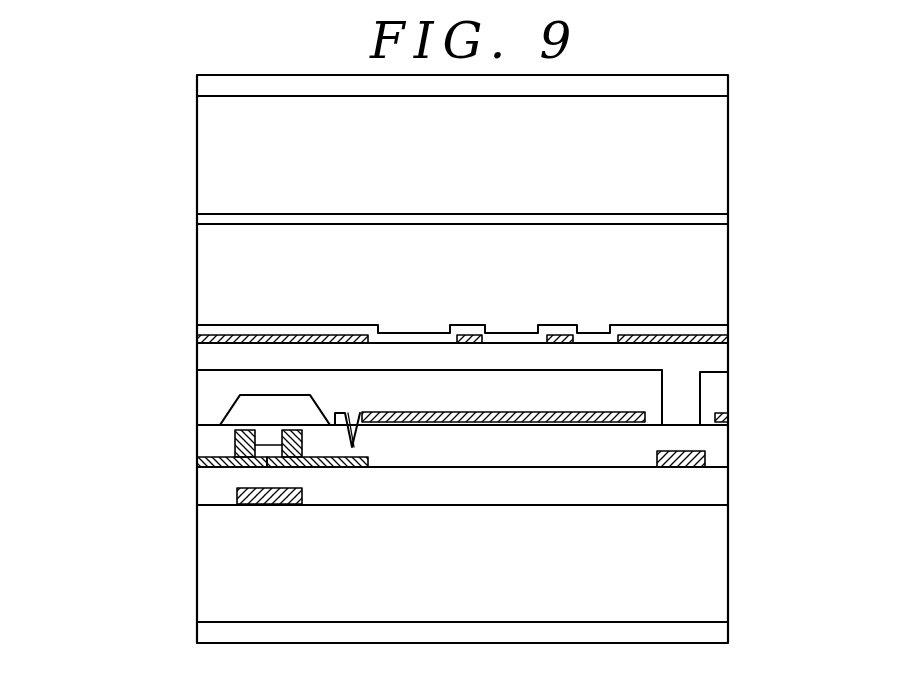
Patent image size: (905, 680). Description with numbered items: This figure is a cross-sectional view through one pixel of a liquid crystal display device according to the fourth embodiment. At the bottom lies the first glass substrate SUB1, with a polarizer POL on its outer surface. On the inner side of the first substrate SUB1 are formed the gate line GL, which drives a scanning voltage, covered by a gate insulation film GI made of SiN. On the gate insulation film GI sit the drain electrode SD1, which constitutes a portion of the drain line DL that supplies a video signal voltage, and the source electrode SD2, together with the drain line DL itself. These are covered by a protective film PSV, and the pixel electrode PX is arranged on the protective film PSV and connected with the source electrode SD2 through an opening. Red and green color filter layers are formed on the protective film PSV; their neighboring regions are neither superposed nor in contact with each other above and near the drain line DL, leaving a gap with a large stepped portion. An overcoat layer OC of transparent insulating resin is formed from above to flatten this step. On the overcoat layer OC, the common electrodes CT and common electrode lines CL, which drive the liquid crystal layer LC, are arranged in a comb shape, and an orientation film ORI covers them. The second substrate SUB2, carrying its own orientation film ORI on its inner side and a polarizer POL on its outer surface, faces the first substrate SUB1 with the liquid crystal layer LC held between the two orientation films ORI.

The polarizer POL is at (205, 87).
The second substrate SUB2 is at (207, 160).
The liquid crystal layer LC is at (722, 243).
The orientation film ORI is at (197, 330).
The common electrode line CL is at (274, 339).
The common electrode CT is at (553, 337).
The overcoat layer OC is at (210, 357).
The pixel electrode PX is at (490, 440).
The protective film PSV is at (718, 435).
The drain electrode SD1 is at (207, 465).
The source electrode SD2 is at (347, 467).
The drain line DL is at (706, 456).
The gate insulation film GI is at (712, 486).
The gate line GL is at (236, 497).
The first substrate SUB1 is at (214, 588).